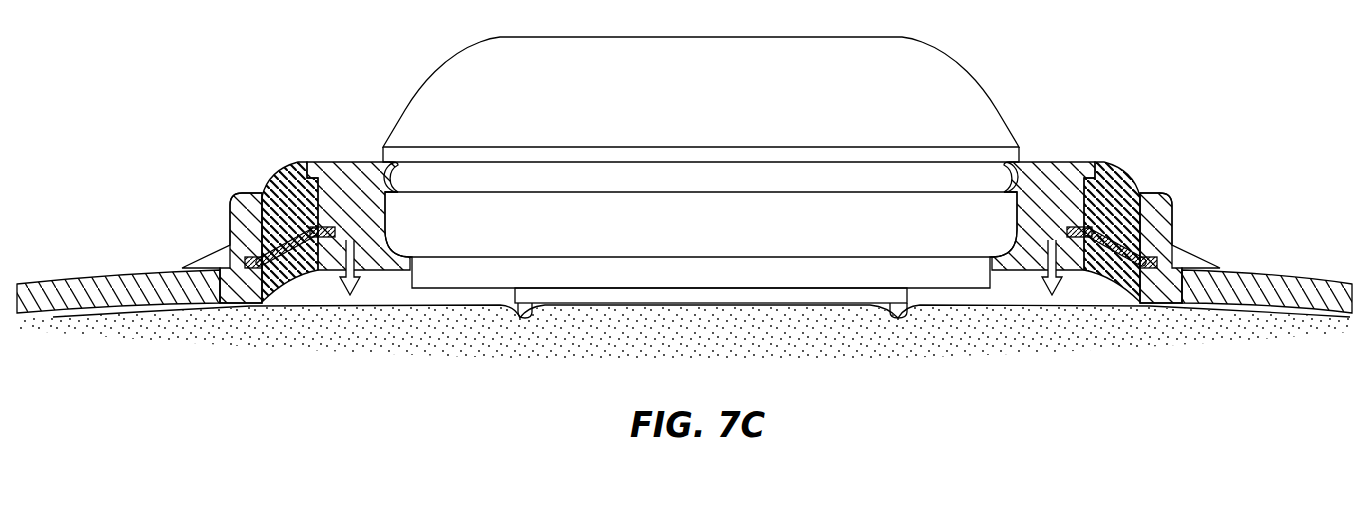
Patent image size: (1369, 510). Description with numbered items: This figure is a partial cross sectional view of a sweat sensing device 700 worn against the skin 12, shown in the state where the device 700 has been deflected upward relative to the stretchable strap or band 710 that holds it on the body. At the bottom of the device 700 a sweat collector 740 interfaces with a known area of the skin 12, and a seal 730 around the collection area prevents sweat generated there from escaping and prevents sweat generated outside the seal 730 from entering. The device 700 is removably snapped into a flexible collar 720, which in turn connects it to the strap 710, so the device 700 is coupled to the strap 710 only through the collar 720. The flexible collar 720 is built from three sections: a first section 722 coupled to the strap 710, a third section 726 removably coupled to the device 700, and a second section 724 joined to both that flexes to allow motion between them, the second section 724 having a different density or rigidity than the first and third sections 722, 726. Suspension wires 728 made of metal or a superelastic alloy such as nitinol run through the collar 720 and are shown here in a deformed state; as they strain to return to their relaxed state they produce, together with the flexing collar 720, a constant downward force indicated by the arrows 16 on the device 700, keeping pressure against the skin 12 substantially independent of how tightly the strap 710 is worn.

The device 700 is at (434, 69).
The stretchable strap or band 710 is at (1291, 270).
The skin 12 is at (1068, 338).
The arrows 16 is at (337, 278).
The flexible collar 720 is at (1167, 190).
The first section 722 is at (240, 201).
The second section 724 is at (293, 175).
The third section 726 is at (356, 157).
The suspension wires 728 is at (250, 258).
The seal 730 is at (520, 320).
The sweat collector 740 is at (817, 306).